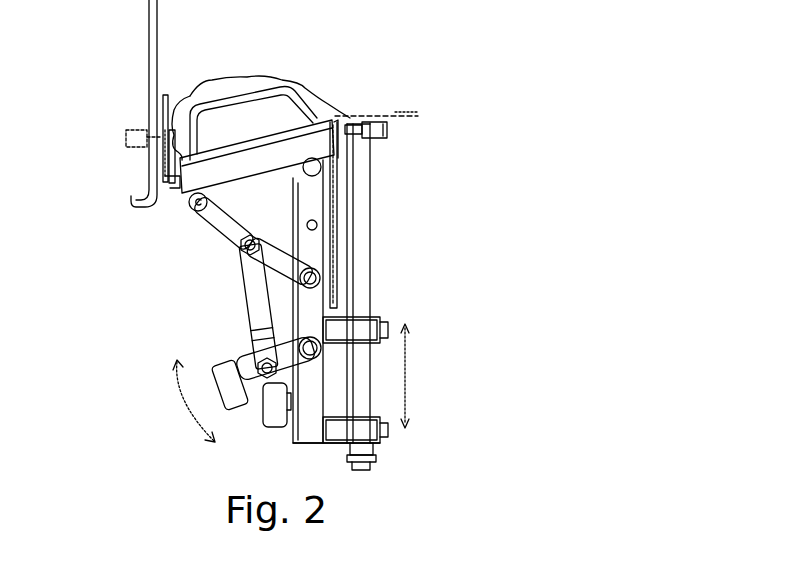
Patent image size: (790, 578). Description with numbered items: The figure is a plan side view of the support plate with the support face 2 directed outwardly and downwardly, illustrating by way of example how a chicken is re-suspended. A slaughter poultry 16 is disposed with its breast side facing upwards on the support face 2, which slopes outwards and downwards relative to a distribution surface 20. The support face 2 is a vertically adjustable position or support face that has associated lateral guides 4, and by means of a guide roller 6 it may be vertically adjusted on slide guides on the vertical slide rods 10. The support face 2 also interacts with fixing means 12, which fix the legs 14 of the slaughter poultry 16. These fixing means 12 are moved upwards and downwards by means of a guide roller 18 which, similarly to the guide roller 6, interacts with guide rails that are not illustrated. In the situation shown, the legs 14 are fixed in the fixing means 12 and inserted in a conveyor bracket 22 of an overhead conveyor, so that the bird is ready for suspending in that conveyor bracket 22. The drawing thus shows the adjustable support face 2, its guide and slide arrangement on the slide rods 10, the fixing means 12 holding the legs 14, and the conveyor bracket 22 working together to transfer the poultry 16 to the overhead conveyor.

The support face 2 is at (292, 130).
The lateral guides 4 is at (287, 108).
The guide roller 6 is at (271, 418).
The vertical slide rods 10 is at (362, 203).
The fixing means 12 is at (166, 150).
The legs 14 is at (140, 134).
The slaughter poultry 16 is at (250, 79).
The guide roller 18 is at (224, 370).
The distribution surface 20 is at (400, 114).
The conveyor bracket 22 is at (157, 66).